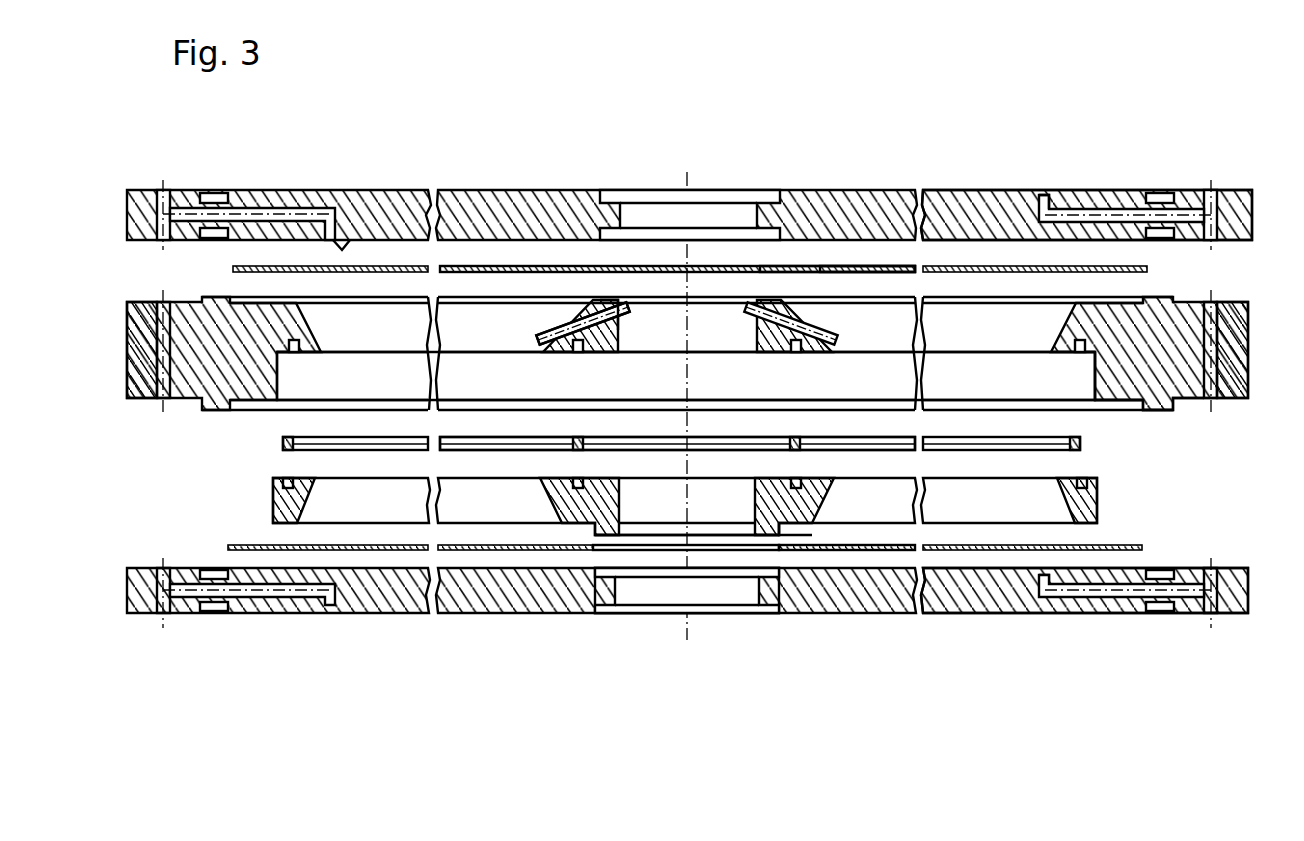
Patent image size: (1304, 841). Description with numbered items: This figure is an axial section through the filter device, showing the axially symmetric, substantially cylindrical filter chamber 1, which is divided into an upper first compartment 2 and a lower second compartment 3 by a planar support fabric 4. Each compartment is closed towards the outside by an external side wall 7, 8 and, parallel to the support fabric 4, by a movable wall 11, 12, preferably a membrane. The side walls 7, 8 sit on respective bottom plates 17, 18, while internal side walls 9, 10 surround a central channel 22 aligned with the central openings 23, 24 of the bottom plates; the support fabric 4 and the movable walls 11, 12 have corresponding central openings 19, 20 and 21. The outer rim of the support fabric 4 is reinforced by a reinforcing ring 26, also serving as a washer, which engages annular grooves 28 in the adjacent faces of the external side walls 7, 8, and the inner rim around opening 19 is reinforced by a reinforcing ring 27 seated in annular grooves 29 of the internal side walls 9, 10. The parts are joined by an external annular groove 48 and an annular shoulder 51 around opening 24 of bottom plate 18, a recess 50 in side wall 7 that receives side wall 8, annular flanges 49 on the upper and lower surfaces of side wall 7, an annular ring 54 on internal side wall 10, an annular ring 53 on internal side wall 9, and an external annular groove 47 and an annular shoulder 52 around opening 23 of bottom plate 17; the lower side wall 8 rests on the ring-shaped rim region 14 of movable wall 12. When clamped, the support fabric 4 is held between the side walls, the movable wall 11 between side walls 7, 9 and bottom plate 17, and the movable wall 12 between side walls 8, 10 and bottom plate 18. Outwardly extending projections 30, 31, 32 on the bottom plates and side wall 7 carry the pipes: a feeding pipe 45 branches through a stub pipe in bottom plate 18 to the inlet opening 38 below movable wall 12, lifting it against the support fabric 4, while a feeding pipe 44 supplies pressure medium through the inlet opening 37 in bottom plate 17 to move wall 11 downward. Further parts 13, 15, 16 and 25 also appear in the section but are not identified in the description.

The filter chamber 1 is at (958, 325).
The first compartment 2 is at (372, 318).
The second compartment 3 is at (379, 503).
The support fabric 4 is at (488, 449).
The external side wall 7 is at (1182, 362).
The external side wall 8 is at (1086, 518).
The internal side wall 9 is at (806, 328).
The internal side wall 10 is at (565, 500).
The movable wall 11 is at (850, 266).
The movable wall 12 is at (878, 551).
The upper strip 13 is at (255, 266).
The ring-shaped rim region 14 is at (273, 551).
The strip section 15 is at (790, 266).
The bar section 16 is at (576, 550).
The bottom plate 17 is at (997, 220).
The bottom plate 18 is at (967, 606).
The central opening 19 is at (634, 456).
The central opening 20 is at (650, 265).
The central opening 21 is at (747, 556).
The central channel 22 is at (667, 312).
The central opening 23 is at (712, 203).
The central opening 24 is at (730, 578).
The sealing wedge 25 is at (563, 328).
The reinforcing ring 26 is at (284, 446).
The reinforcing ring 27 is at (820, 492).
The annular grooves 28 is at (293, 338).
The annular grooves 29 is at (583, 340).
The projection 30 is at (136, 190).
The projection 31 is at (133, 567).
The projection 32 is at (143, 384).
The inlet opening 37 is at (343, 248).
The inlet opening 38 is at (1046, 200).
The feeding pipe 44 is at (165, 236).
The feeding pipe 45 is at (1213, 186).
The external annular groove 47 is at (210, 190).
The external annular groove 48 is at (208, 577).
The annular flange 49 is at (217, 402).
The recess 50 is at (292, 374).
The annular shoulder 51 is at (606, 305).
The annular shoulder 52 is at (605, 608).
The annular ring 53 is at (598, 328).
The annular ring 54 is at (795, 558).